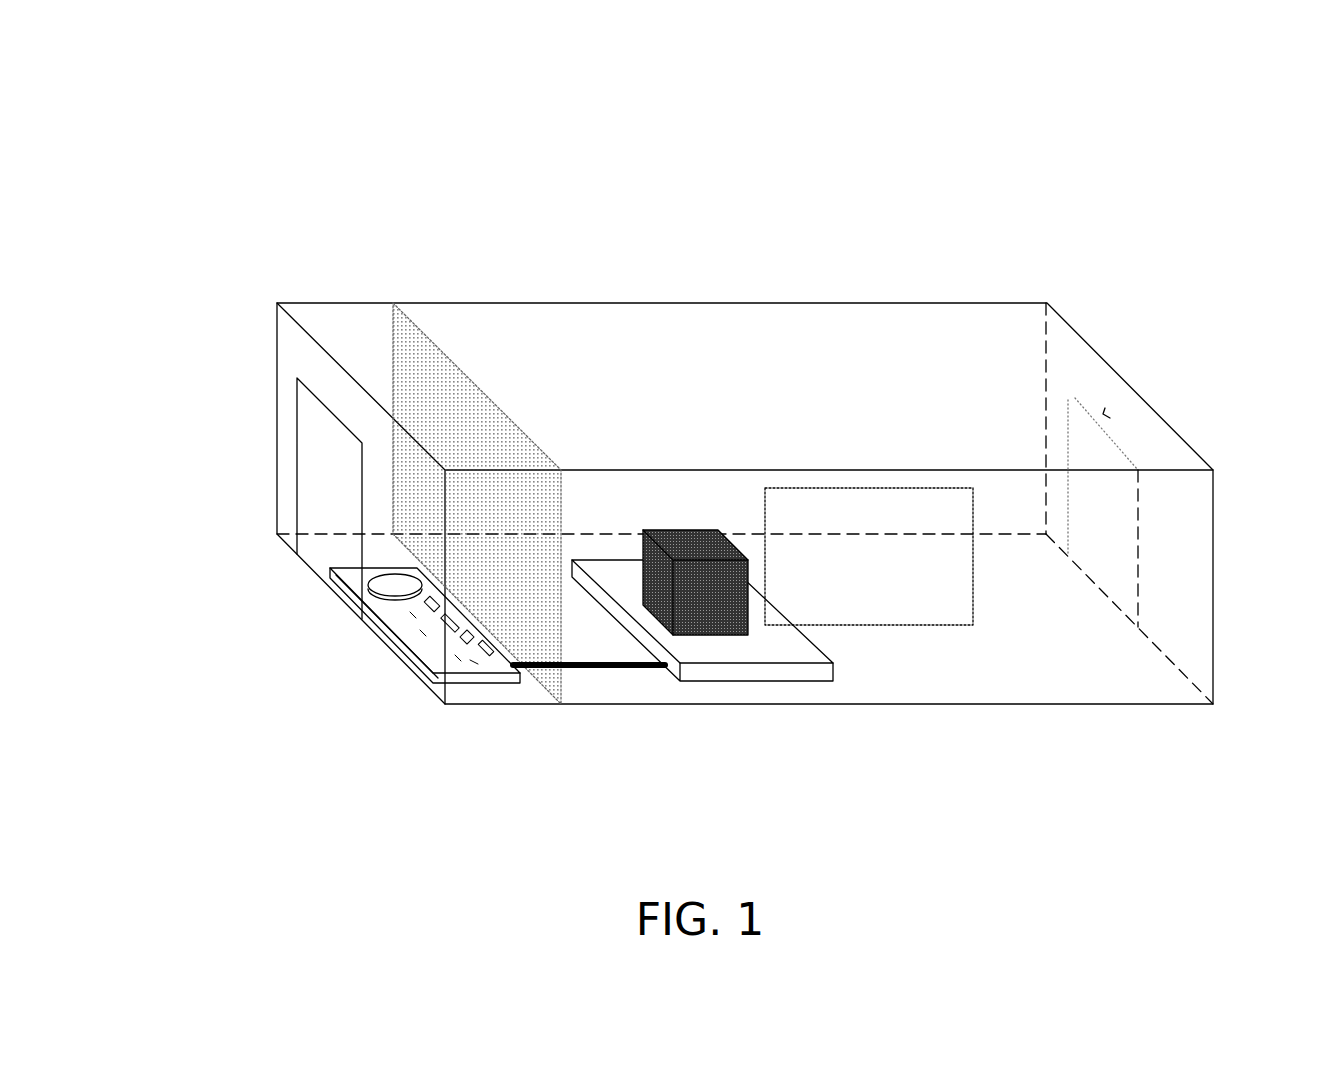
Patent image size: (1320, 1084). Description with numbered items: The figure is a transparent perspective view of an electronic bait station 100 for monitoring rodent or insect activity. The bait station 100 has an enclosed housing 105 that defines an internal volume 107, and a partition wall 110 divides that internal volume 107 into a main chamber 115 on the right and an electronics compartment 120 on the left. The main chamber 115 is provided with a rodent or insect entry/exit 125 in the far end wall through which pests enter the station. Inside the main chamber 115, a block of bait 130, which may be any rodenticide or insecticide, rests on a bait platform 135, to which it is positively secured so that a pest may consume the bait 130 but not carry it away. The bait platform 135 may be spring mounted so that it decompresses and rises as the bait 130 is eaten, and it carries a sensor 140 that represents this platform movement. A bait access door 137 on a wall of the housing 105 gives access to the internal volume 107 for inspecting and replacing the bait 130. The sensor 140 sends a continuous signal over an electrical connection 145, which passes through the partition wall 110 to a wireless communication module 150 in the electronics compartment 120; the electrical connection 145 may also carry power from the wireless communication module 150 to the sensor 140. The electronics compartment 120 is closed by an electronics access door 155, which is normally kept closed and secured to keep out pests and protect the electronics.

The bait station 100 is at (727, 226).
The enclosed housing 105 is at (935, 303).
The internal volume 107 is at (888, 420).
The partition wall 110 is at (462, 386).
The main chamber 115 is at (1023, 624).
The electronics compartment 120 is at (377, 340).
The rodent or insect entry/exit 125 is at (1105, 410).
The bait 130 is at (672, 528).
The bait platform 135 is at (793, 540).
The bait access door 137 is at (897, 557).
The sensor 140 is at (690, 678).
The electrical connection 145 is at (583, 668).
The wireless communication module 150 is at (402, 597).
The electronics access door 155 is at (297, 408).